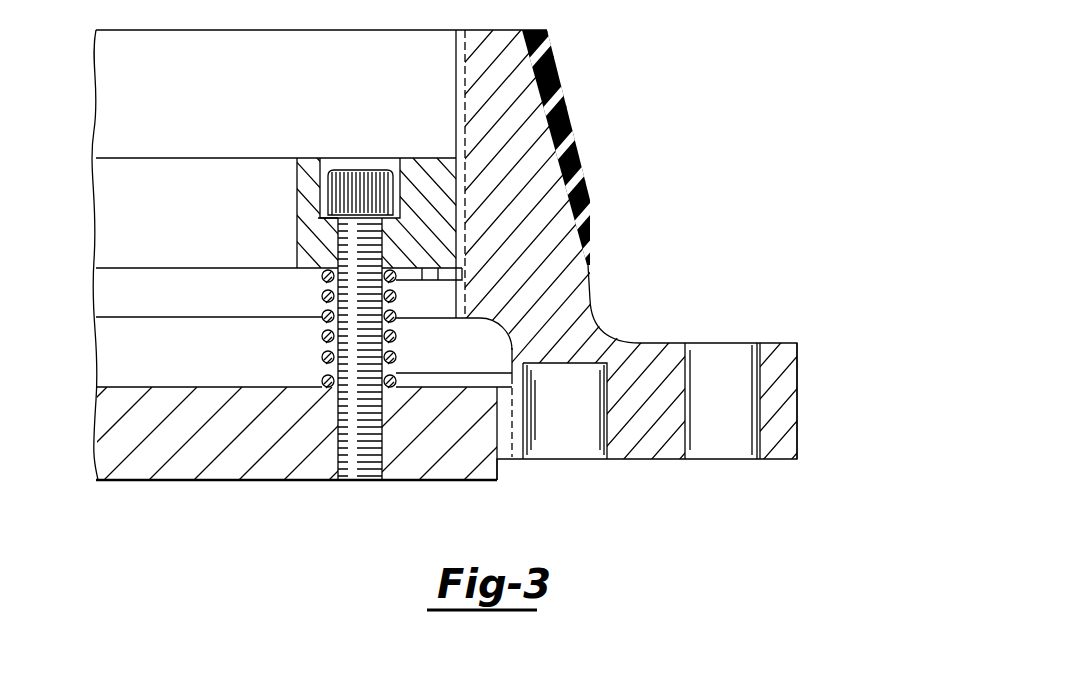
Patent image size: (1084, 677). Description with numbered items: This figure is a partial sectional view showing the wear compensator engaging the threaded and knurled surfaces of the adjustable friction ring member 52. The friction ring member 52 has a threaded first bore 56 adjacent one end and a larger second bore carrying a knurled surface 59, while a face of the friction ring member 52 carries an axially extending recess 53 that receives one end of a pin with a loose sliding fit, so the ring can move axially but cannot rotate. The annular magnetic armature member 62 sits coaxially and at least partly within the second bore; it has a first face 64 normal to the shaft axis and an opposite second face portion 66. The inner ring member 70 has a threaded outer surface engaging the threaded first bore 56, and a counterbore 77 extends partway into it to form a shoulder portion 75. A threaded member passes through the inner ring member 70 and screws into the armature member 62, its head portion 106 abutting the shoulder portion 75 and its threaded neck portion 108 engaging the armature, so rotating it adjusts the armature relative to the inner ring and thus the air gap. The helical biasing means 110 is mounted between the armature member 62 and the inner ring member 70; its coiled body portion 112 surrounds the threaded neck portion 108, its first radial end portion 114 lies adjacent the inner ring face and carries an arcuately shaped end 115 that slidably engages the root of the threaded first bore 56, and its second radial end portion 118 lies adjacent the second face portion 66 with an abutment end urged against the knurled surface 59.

The adjustable friction ring member 52 is at (527, 257).
The axially extending recess 53 is at (605, 427).
The threaded first bore 56 is at (465, 229).
The knurled surface 59 is at (510, 423).
The annular magnetic armature member 62 is at (223, 445).
The first face 64 is at (212, 481).
The second face portion 66 is at (196, 347).
The inner ring member 70 is at (468, 173).
The shoulder portion 75 is at (320, 208).
The counterbore 77 is at (385, 158).
The head portion 106 is at (348, 190).
The threaded neck portion 108 is at (355, 450).
The helical biasing means 110 is at (296, 296).
The coiled body portion 112 is at (322, 336).
The first radial end portion 114 is at (420, 282).
The arcuately shaped end 115 is at (462, 272).
The second radial end portion 118 is at (447, 383).